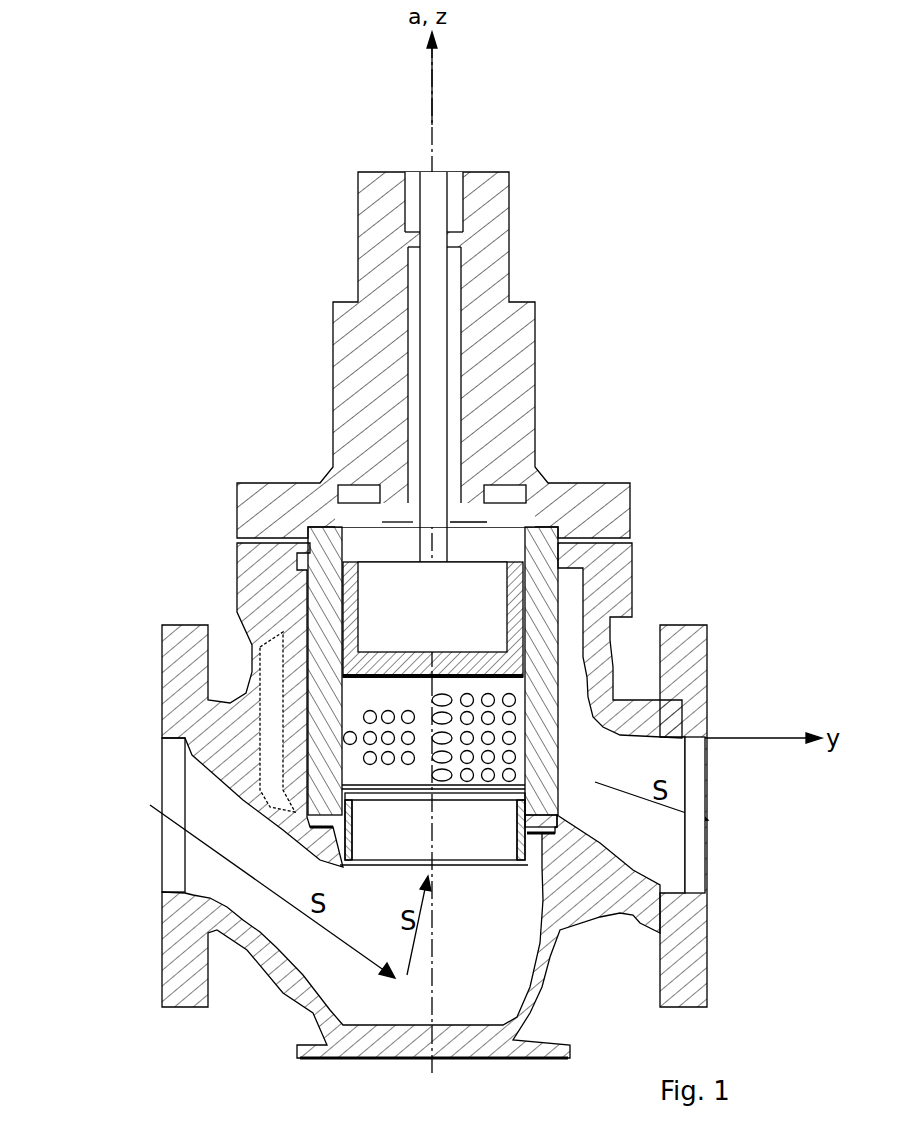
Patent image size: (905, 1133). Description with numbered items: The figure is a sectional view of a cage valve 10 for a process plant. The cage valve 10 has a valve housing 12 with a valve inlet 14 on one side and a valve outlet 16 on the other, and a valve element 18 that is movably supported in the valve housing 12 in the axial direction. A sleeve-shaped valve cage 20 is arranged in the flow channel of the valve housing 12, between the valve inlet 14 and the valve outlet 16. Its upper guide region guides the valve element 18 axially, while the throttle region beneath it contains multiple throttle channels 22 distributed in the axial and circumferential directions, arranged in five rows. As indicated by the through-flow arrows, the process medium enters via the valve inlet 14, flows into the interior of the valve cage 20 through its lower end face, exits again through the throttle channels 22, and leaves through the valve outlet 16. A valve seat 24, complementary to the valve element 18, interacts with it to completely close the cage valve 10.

The cage valve 10 is at (258, 200).
The valve housing 12 is at (613, 562).
The valve inlet 14 is at (170, 793).
The valve outlet 16 is at (697, 848).
The valve element 18 is at (513, 632).
The valve cage 20 is at (315, 675).
The throttle channels 22 is at (360, 717).
The valve seat 24 is at (353, 790).